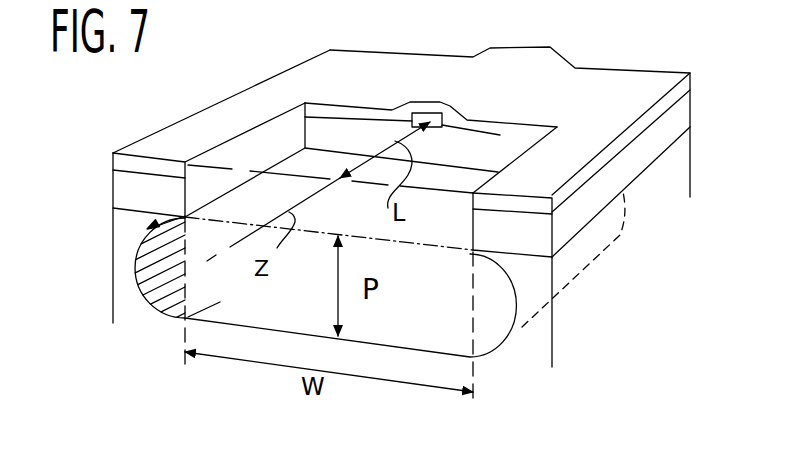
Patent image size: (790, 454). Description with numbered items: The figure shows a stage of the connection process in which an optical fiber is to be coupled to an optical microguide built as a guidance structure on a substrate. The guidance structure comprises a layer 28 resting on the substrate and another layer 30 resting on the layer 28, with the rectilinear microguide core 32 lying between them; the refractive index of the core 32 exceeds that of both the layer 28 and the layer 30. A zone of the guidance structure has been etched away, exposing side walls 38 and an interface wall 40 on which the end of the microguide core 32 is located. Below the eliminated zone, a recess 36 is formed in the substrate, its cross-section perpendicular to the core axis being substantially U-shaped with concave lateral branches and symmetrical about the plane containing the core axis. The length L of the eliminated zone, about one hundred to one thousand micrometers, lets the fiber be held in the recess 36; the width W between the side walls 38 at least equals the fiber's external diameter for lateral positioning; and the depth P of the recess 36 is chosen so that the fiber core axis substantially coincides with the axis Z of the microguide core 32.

The layer 28 is at (123, 188).
The layer 30 is at (113, 154).
The microguide core 32 is at (423, 113).
The recess 36 is at (145, 266).
The side walls 38 is at (259, 147).
The interface wall 40 is at (343, 128).